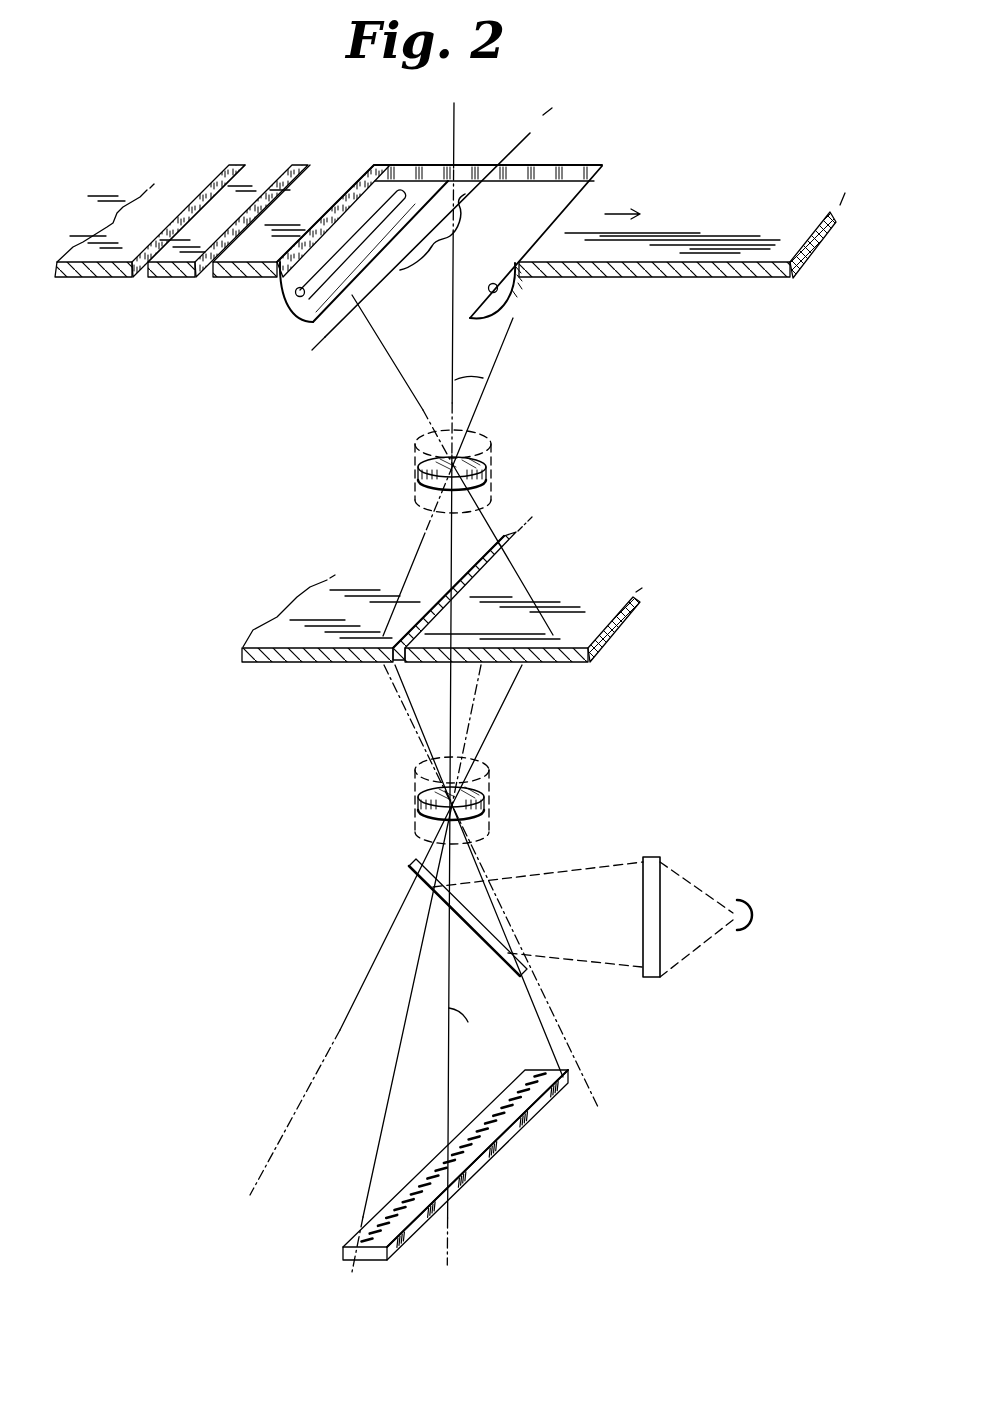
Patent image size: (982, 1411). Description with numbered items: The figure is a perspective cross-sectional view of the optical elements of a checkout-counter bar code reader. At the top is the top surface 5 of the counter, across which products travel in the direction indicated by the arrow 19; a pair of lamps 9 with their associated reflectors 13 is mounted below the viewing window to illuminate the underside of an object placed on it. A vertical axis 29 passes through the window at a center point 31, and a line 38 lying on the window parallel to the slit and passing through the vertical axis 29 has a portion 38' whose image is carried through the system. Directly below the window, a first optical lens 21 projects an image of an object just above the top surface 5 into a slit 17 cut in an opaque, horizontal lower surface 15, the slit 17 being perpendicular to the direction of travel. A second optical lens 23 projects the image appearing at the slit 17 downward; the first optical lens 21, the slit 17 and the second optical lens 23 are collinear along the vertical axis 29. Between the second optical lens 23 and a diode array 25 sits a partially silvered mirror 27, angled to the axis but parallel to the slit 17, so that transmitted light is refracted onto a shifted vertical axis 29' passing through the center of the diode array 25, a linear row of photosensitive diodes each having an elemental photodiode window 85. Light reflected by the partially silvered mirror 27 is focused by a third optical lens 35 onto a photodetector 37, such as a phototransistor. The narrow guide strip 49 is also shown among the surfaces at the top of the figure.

The top surface 5 is at (633, 250).
The lamps 9 is at (296, 293).
The reflectors 13 is at (293, 310).
The lower surface 15 is at (287, 627).
The slit 17 is at (436, 616).
The arrow 19 is at (622, 203).
The first optical lens 21 is at (418, 471).
The second optical lens 23 is at (481, 803).
The diode array 25 is at (531, 1148).
The partially silvered mirror 27 is at (478, 936).
The vertical axis 29 is at (499, 385).
The shifted vertical axis 29' is at (477, 1024).
The center point 31 is at (461, 233).
The third optical lens 35 is at (653, 834).
The photodetector 37 is at (751, 914).
The line 38 is at (456, 228).
The portion of the line 38' is at (432, 232).
The guide strip 49 is at (223, 244).
The elemental photodiode window 85 is at (455, 1154).